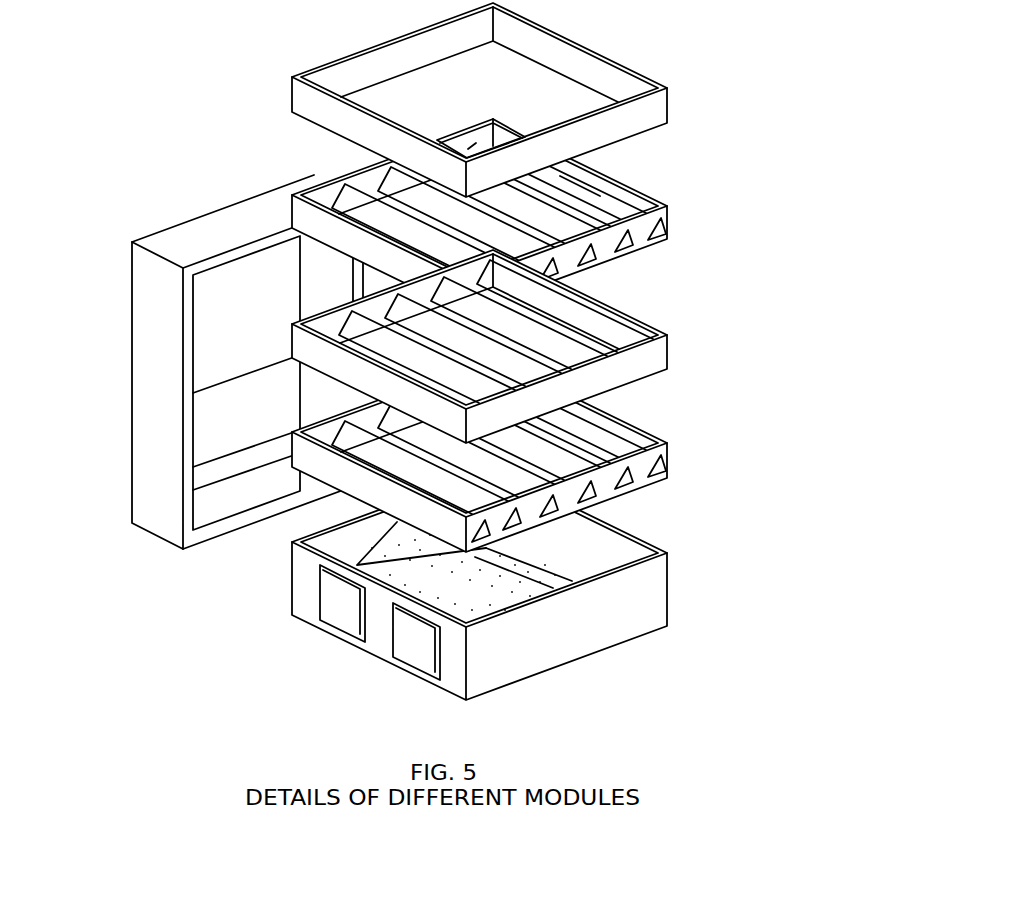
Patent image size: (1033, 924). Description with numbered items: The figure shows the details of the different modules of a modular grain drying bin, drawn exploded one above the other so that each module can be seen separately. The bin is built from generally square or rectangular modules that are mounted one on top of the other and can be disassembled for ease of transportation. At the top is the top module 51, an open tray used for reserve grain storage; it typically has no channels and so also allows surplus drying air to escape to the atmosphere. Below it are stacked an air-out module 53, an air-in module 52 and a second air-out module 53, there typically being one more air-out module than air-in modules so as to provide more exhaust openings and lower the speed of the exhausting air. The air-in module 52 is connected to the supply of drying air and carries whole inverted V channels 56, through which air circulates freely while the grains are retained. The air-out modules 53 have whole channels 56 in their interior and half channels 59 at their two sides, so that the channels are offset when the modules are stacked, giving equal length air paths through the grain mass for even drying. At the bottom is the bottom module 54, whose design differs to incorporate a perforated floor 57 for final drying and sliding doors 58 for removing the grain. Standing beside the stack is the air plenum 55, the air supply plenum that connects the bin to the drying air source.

The top module 51 is at (610, 56).
The air-in module 52 is at (635, 320).
The air-out module 53 is at (640, 194).
The bottom module 54 is at (637, 542).
The air plenum 55 is at (140, 375).
The channel 56 is at (345, 200).
The perforated floor 57 is at (385, 570).
The sliding door 58 is at (418, 652).
The half channel 59 is at (607, 190).